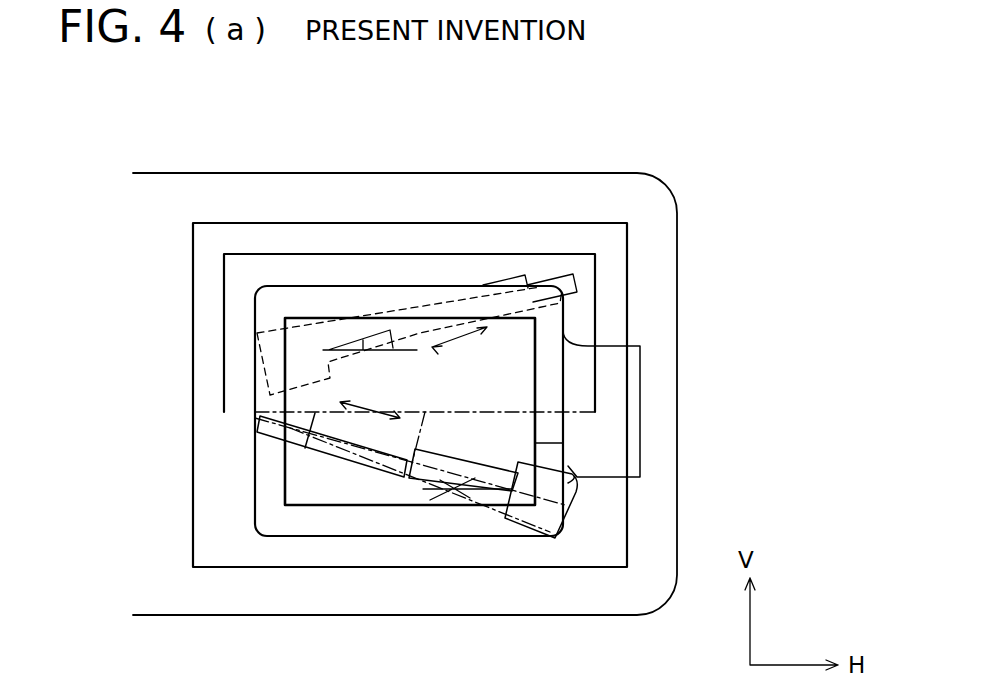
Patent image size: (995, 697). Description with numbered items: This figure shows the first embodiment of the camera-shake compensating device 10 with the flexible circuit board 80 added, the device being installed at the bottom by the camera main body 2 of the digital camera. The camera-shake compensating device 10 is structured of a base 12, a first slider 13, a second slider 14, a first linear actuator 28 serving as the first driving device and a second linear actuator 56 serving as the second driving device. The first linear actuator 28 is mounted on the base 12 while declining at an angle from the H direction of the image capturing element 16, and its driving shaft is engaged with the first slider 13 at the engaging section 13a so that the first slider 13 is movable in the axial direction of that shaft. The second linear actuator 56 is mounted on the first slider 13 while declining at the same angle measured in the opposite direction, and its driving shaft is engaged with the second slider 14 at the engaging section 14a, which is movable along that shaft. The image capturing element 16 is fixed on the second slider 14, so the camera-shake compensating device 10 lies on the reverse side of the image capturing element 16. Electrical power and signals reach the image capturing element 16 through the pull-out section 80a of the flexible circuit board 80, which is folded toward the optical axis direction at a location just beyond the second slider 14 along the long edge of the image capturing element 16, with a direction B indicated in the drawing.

The camera main body 2 is at (640, 172).
The camera-shake compensating device 10 is at (702, 217).
The base 12 is at (627, 492).
The first slider 13 is at (595, 334).
The engaging section 13a is at (337, 452).
The second slider 14 is at (257, 536).
The engaging section 14a is at (503, 283).
The image capturing element 16 is at (535, 388).
The first linear actuator 28 is at (548, 525).
The second linear actuator 56 is at (298, 336).
The flexible circuit board 80 is at (268, 318).
The pull-out section 80a is at (640, 430).
The direction B is at (442, 597).